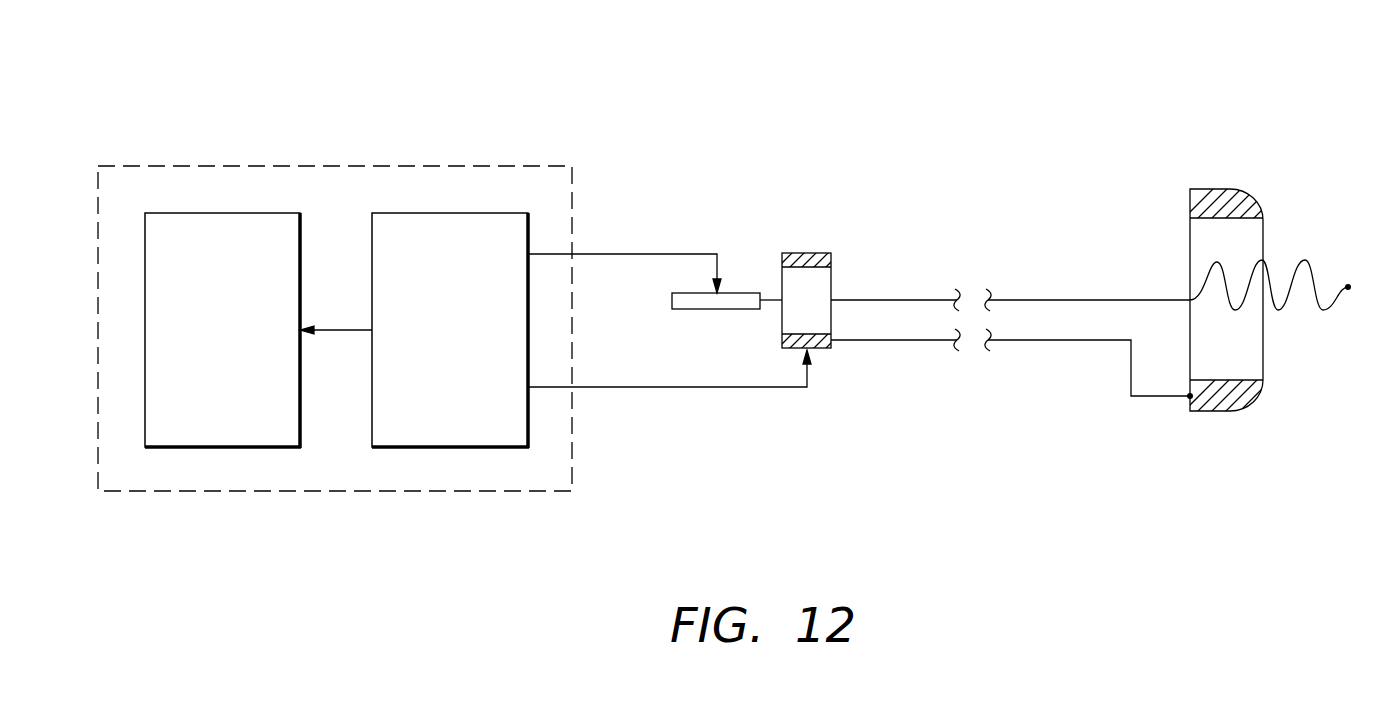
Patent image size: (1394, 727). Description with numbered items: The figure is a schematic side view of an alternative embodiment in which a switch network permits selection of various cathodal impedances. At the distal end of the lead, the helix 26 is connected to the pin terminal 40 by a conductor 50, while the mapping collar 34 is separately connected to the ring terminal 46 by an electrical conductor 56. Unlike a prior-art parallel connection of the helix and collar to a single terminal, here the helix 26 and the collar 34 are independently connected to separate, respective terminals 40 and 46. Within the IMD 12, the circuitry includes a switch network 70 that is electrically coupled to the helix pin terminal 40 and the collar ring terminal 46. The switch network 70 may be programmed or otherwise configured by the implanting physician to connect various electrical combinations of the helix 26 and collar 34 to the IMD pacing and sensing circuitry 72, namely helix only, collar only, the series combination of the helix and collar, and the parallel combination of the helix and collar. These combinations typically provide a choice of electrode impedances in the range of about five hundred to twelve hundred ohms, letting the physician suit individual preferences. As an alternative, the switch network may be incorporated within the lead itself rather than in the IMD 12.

The IMD 12 is at (371, 166).
The pacing and sensing circuitry 72 is at (251, 213).
The switch network 70 is at (478, 213).
The pin terminal 40 is at (737, 293).
The ring terminal 46 is at (806, 253).
The conductor 50 is at (1052, 300).
The electrical conductor 56 is at (1025, 340).
The mapping collar 34 is at (1216, 189).
The helix 26 is at (1270, 272).